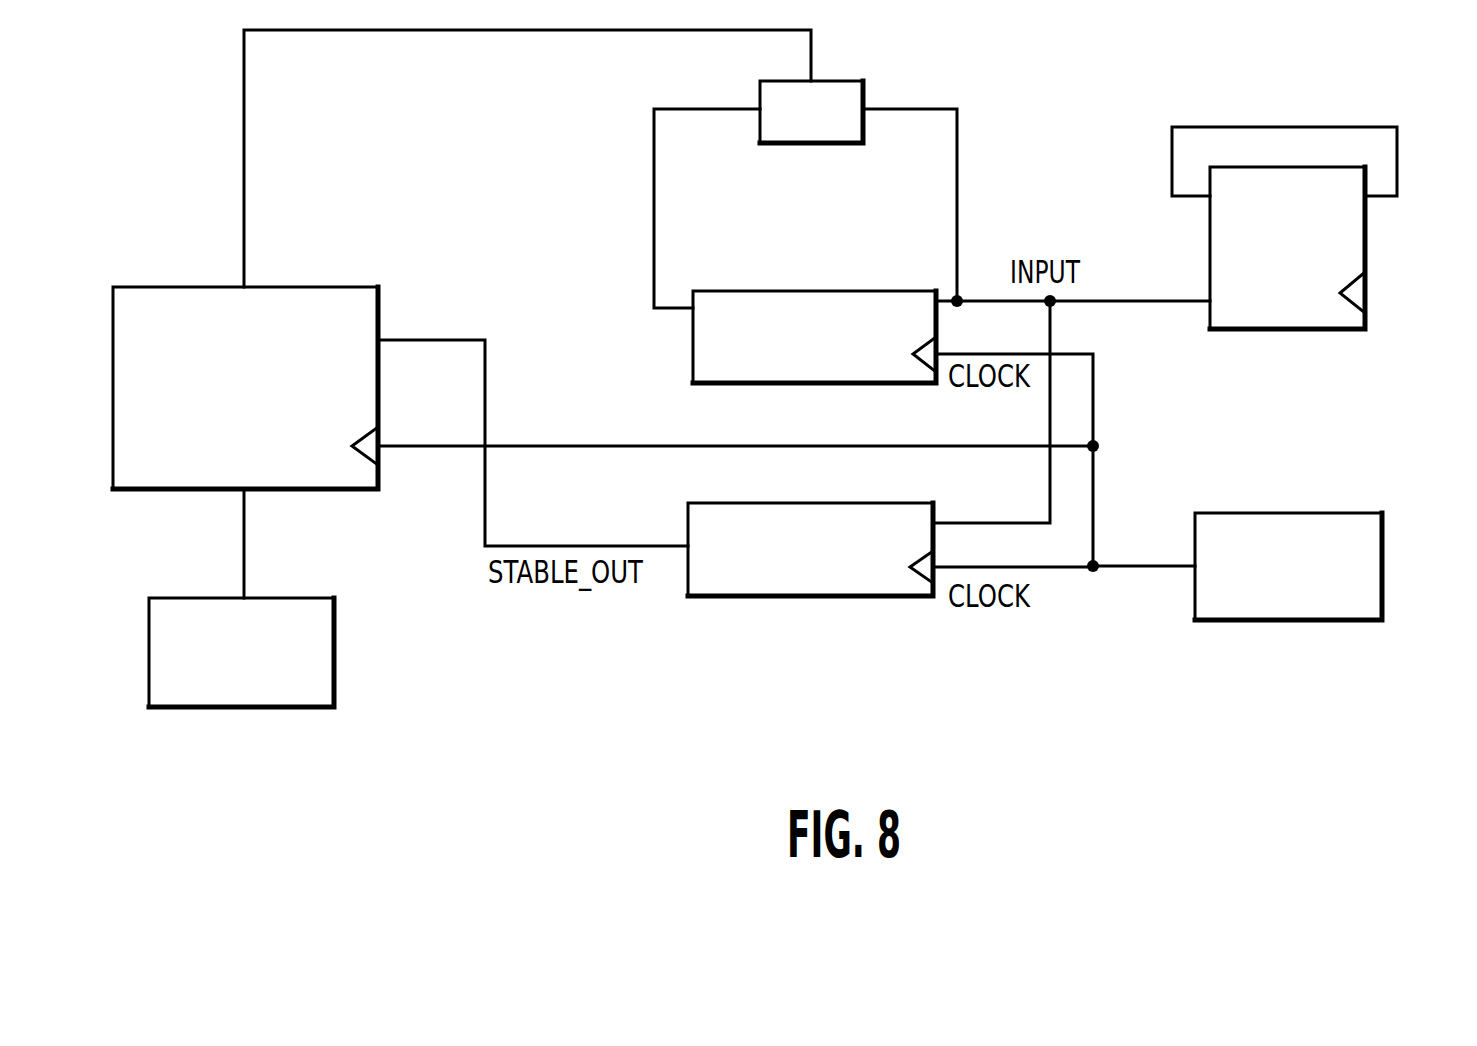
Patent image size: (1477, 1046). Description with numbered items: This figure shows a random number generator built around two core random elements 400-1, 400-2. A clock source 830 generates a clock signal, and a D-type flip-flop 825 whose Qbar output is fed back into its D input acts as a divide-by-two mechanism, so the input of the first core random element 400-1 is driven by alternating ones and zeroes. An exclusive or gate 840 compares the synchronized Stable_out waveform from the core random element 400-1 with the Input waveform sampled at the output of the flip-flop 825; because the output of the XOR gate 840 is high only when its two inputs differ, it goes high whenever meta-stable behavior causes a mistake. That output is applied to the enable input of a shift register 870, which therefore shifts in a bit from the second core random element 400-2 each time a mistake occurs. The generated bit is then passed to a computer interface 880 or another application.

The shift register 870 is at (288, 287).
The computer interface 880 is at (305, 710).
The exclusive or (XOR) circuit 840 is at (820, 144).
The core random element 400-1 is at (770, 290).
The core random element 400-2 is at (840, 600).
The D-type flip-flop 825 is at (1365, 266).
The clock source 830 is at (1312, 622).